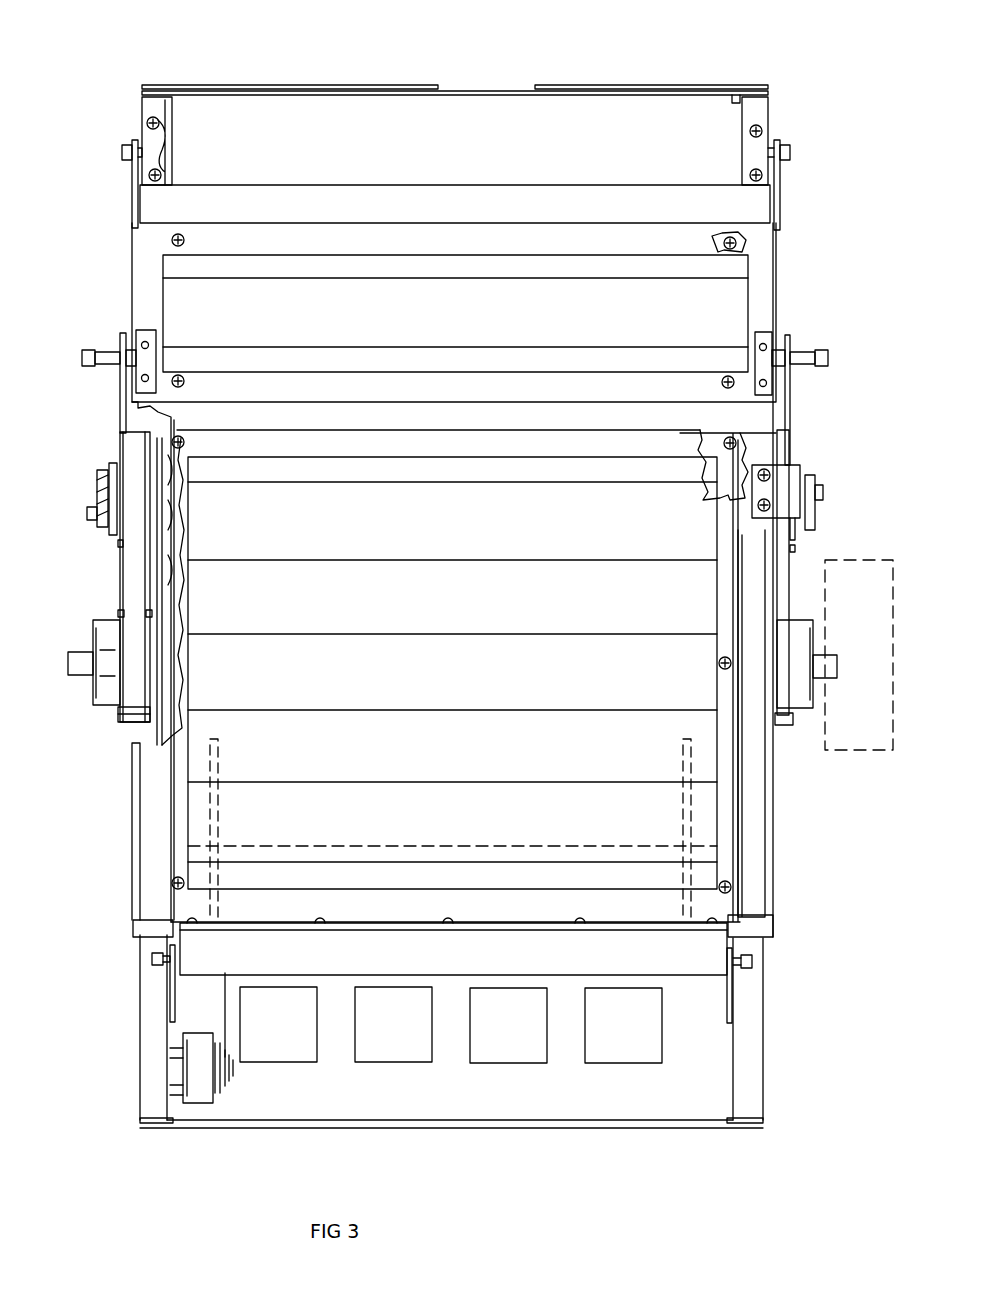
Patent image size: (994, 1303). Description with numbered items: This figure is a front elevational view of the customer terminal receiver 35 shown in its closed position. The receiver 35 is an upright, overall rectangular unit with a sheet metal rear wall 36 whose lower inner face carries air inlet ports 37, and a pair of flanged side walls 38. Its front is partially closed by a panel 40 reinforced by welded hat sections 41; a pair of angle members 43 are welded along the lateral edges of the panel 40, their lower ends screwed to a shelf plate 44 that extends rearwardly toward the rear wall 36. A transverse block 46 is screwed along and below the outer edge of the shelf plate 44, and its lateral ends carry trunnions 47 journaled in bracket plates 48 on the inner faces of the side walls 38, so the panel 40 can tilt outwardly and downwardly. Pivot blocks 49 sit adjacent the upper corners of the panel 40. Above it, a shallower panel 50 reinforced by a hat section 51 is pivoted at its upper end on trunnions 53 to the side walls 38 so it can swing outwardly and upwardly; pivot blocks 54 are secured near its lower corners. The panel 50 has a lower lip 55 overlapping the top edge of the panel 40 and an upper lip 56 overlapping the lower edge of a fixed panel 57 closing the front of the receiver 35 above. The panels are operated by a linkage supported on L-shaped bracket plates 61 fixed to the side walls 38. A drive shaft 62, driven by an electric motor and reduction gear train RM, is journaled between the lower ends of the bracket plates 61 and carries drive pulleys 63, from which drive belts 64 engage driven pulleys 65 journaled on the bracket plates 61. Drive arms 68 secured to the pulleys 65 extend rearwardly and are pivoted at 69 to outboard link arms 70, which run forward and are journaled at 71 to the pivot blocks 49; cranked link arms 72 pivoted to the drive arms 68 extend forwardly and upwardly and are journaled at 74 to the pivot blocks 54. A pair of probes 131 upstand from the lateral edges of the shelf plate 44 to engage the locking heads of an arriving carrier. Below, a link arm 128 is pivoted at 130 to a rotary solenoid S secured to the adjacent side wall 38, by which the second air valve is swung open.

The customer terminal receiver 35 is at (518, 50).
The fixed panel 57 is at (652, 100).
The upper lip 56 is at (392, 190).
The trunnions 53 is at (125, 162).
The shallower panel 50 is at (454, 572).
The hat section 51 is at (628, 285).
The pivot blocks 54 is at (158, 335).
The journal 74 is at (100, 352).
The cranked link arms 72 is at (118, 385).
The lower lip 55 is at (435, 405).
The pivot blocks 49 is at (752, 488).
The outboard link arms 70 is at (97, 480).
The pivot 69 is at (87, 513).
The journal 71 is at (823, 492).
The drive arms 68 is at (113, 463).
The driven pulleys 65 is at (118, 543).
The drive belts 64 is at (125, 578).
The L-shaped bracket plates 61 is at (175, 600).
The panel 40 is at (97, 930).
The hat sections 41 is at (555, 650).
The drive shaft 62 is at (88, 675).
The drive pulleys 63 is at (118, 722).
The angle members 43 is at (132, 790).
The probes 131 is at (218, 812).
The electric motor and reduction gear train RM is at (858, 752).
The transverse block 46 is at (362, 940).
The shelf plate 44 is at (515, 935).
The trunnions 47 is at (150, 960).
The bracket plates 48 is at (175, 1012).
The side walls 38 is at (145, 1045).
The rear wall 36 is at (545, 1130).
The link arm 128 is at (227, 1010).
The rotary solenoid S is at (190, 1110).
The pivot 130 is at (233, 1078).
The air inlet ports 37 is at (385, 1062).